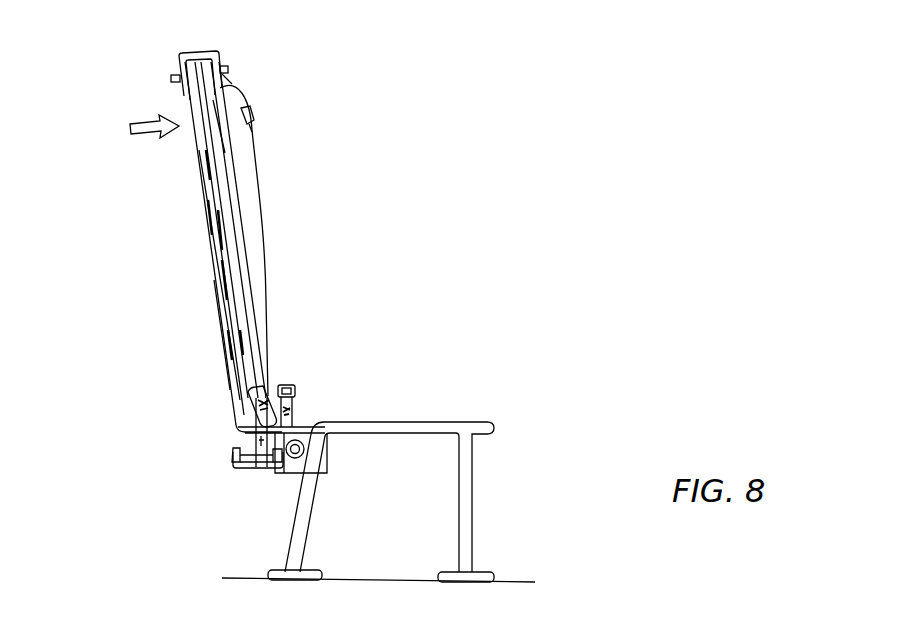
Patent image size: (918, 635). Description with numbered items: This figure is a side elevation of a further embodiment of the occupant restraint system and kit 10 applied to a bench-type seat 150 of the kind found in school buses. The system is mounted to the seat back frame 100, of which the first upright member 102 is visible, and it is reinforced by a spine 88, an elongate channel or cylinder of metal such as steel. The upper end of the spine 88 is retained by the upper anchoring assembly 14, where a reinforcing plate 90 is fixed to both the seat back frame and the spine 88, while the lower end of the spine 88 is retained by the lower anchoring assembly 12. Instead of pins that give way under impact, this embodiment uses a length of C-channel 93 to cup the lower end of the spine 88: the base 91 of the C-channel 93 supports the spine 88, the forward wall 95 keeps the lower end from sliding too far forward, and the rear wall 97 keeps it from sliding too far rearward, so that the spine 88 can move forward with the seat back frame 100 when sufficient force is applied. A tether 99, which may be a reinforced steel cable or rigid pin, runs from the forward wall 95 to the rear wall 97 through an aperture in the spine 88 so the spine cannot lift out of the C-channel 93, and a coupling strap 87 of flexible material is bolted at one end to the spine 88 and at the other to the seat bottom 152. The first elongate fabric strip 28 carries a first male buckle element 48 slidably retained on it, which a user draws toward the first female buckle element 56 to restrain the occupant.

The occupant restraint system and kit 10 is at (135, 396).
The lower anchoring assembly 12 is at (267, 477).
The upper anchoring assembly 14 is at (225, 48).
The first elongate fabric strip 28 is at (262, 231).
The first male buckle element 48 is at (256, 112).
The first female buckle element 56 is at (297, 387).
The coupling strap 87 is at (246, 395).
The spine 88 is at (226, 153).
The reinforcing plate 90 is at (180, 55).
The base 91 is at (252, 467).
The C-channel 93 is at (240, 465).
The forward wall 95 is at (268, 471).
The rear wall 97 is at (232, 456).
The tether 99 is at (240, 443).
The seat back frame 100 is at (187, 207).
The first upright member 102 is at (218, 298).
The bench-type seat 150 is at (417, 363).
The seat bottom 152 is at (434, 421).